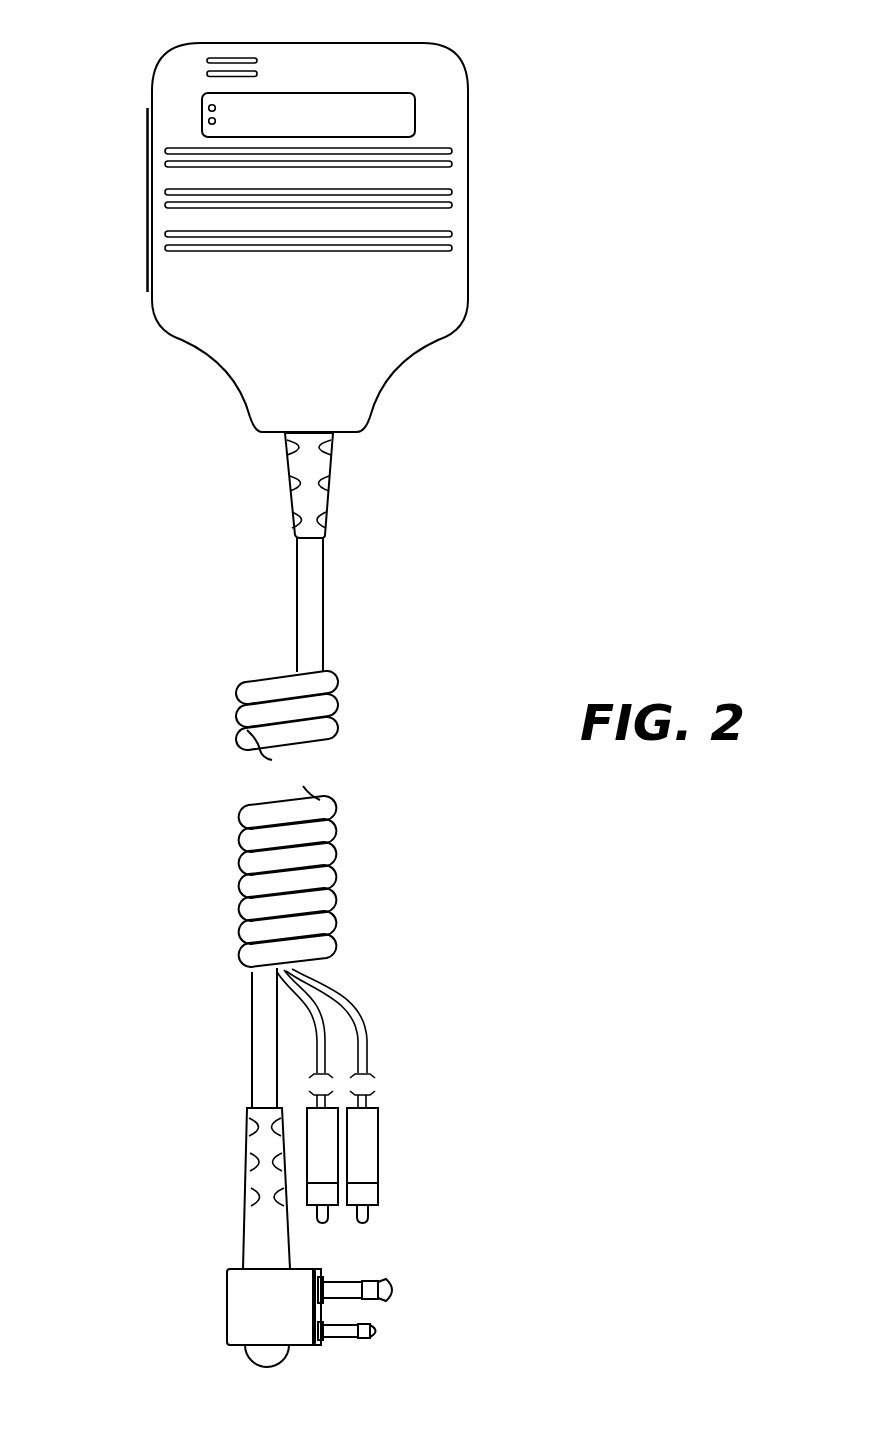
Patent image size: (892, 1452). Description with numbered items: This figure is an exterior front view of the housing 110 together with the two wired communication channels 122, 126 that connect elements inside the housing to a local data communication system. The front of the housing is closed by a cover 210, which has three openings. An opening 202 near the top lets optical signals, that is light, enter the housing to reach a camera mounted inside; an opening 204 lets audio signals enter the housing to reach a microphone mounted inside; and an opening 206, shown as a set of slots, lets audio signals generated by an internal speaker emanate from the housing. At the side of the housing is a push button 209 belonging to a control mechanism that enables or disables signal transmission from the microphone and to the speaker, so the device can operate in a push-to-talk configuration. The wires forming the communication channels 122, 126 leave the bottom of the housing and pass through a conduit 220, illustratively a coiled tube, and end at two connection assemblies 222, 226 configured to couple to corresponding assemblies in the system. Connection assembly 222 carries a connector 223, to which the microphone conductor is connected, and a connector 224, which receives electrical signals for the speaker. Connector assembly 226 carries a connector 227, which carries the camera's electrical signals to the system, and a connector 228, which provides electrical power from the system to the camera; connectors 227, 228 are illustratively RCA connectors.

The housing 110 is at (273, 216).
The cover 210 is at (437, 98).
The opening 202 is at (229, 58).
The opening 204 is at (207, 110).
The opening 206 is at (185, 192).
The push button 209 is at (148, 253).
The conduit 220 is at (323, 590).
The connection assembly 222 is at (292, 1237).
The communication channel 122 is at (292, 1318).
The connector 223 is at (377, 1333).
The connector 224 is at (395, 1295).
The connector assembly 226 is at (404, 1167).
The communication channel 126 is at (426, 1167).
The connector 227 is at (367, 1216).
The connector 228 is at (327, 1218).